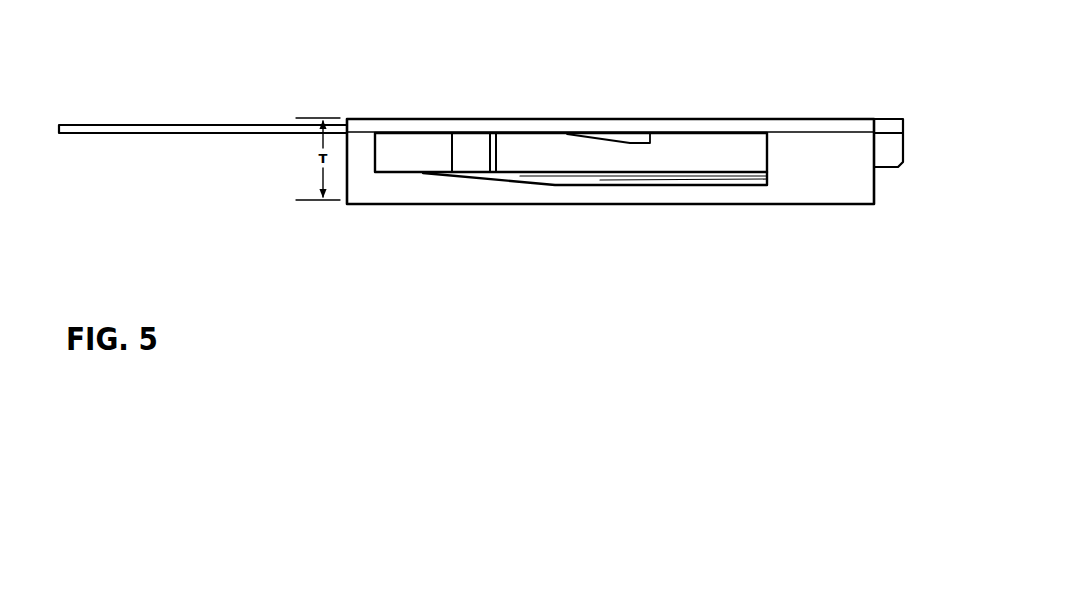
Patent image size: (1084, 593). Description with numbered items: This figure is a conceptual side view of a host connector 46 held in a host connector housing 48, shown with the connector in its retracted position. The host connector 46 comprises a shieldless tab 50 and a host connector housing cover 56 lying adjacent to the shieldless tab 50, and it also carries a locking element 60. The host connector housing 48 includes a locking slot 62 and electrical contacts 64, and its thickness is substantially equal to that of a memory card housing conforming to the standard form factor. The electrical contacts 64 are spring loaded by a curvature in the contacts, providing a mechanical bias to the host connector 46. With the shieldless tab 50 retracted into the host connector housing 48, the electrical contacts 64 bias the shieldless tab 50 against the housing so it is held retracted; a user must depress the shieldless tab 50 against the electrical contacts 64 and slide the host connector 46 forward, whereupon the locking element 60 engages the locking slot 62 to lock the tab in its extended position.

The host connector 46 is at (374, 56).
The host connector housing 48 is at (807, 192).
The shieldless tab 50 is at (890, 125).
The host connector housing cover 56 is at (234, 116).
The locking element 60 is at (413, 150).
The locking slot 62 is at (676, 128).
The electrical contacts 64 is at (667, 180).